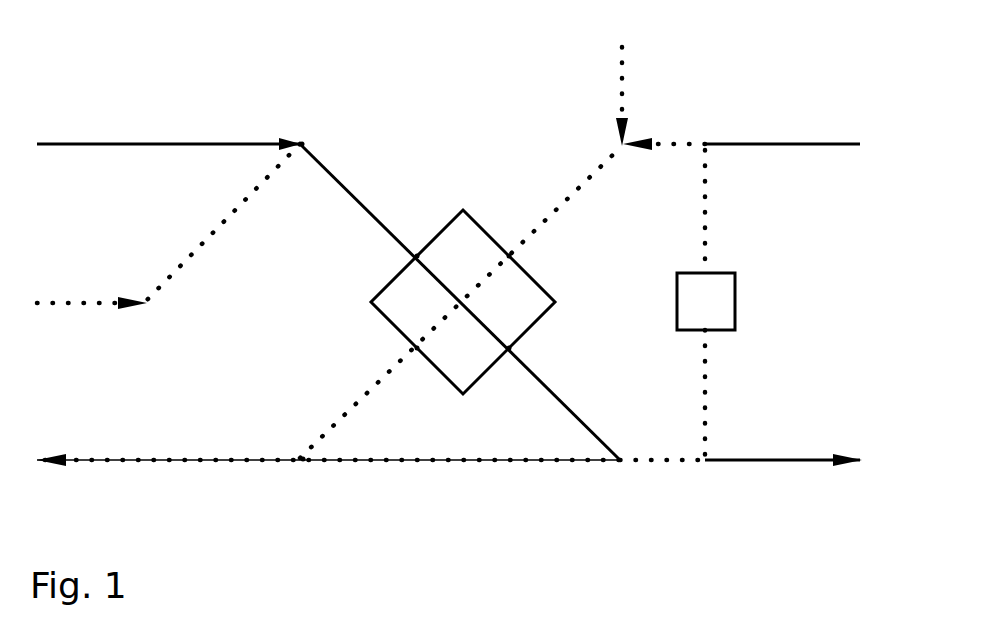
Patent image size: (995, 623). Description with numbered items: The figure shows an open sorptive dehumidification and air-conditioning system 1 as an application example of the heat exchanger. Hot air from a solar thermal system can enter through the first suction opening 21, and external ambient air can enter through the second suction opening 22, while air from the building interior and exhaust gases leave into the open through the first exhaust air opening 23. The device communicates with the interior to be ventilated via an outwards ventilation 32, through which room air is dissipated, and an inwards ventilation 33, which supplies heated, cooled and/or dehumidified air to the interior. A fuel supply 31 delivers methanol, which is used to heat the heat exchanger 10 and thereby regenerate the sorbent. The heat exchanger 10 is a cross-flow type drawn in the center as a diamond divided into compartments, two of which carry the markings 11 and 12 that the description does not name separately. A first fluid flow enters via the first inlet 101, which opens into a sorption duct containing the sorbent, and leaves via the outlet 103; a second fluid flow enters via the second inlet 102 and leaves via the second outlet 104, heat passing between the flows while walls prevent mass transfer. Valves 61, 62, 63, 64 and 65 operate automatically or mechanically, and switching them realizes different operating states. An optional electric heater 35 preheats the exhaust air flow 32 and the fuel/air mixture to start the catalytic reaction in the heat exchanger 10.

The open sorptive dehumidification and air-conditioning system 1 is at (483, 76).
The heat exchanger 10 is at (464, 208).
The first exchanger section 11 is at (466, 252).
The second exchanger section 12 is at (514, 295).
The first suction opening 21 is at (56, 148).
The second suction opening 22 is at (70, 300).
The first exhaust air opening 23 is at (87, 457).
The fuel supply 31 is at (625, 62).
The outwards ventilation 32 is at (823, 147).
The inwards ventilation 33 is at (806, 458).
The electric heater 35 is at (736, 303).
The valve 61 is at (302, 141).
The valve 62 is at (304, 456).
The valve 63 is at (621, 456).
The valve 64 is at (624, 150).
The valve 65 is at (705, 141).
The first inlet 101 is at (416, 253).
The second inlet 102 is at (512, 256).
The outlet 103 is at (509, 351).
The second outlet 104 is at (415, 349).